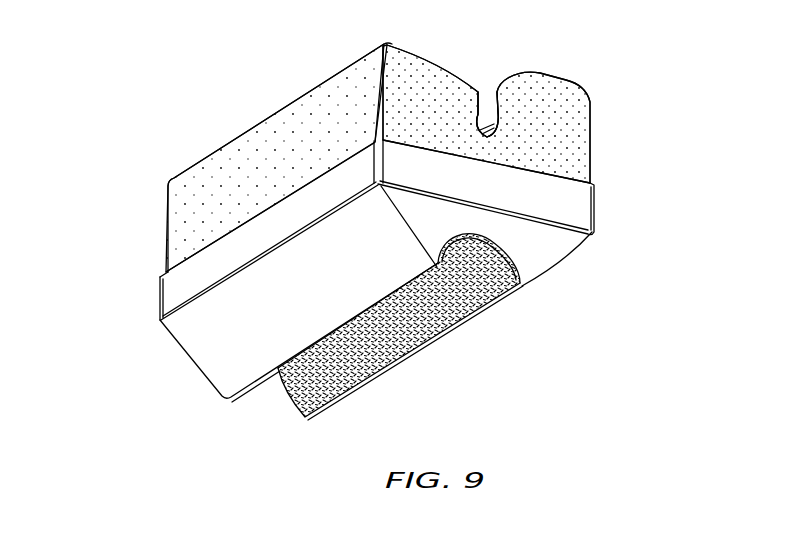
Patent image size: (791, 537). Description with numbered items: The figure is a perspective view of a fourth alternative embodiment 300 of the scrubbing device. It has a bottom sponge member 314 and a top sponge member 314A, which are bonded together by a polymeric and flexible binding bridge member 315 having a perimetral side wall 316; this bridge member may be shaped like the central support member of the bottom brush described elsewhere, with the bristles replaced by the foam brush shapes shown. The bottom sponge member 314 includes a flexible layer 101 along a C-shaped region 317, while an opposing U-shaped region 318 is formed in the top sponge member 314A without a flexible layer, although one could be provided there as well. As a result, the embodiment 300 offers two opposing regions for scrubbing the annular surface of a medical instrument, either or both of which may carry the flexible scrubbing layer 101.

The alternative embodiment 300 is at (224, 111).
The bottom sponge member 314 is at (188, 335).
The top sponge member 314A is at (188, 214).
The binding bridge member 315 is at (167, 294).
The perimetral side wall 316 is at (570, 194).
The C-shaped region 317 is at (444, 243).
The U-shaped region 318 is at (502, 98).
The flexible layer 101 is at (490, 303).